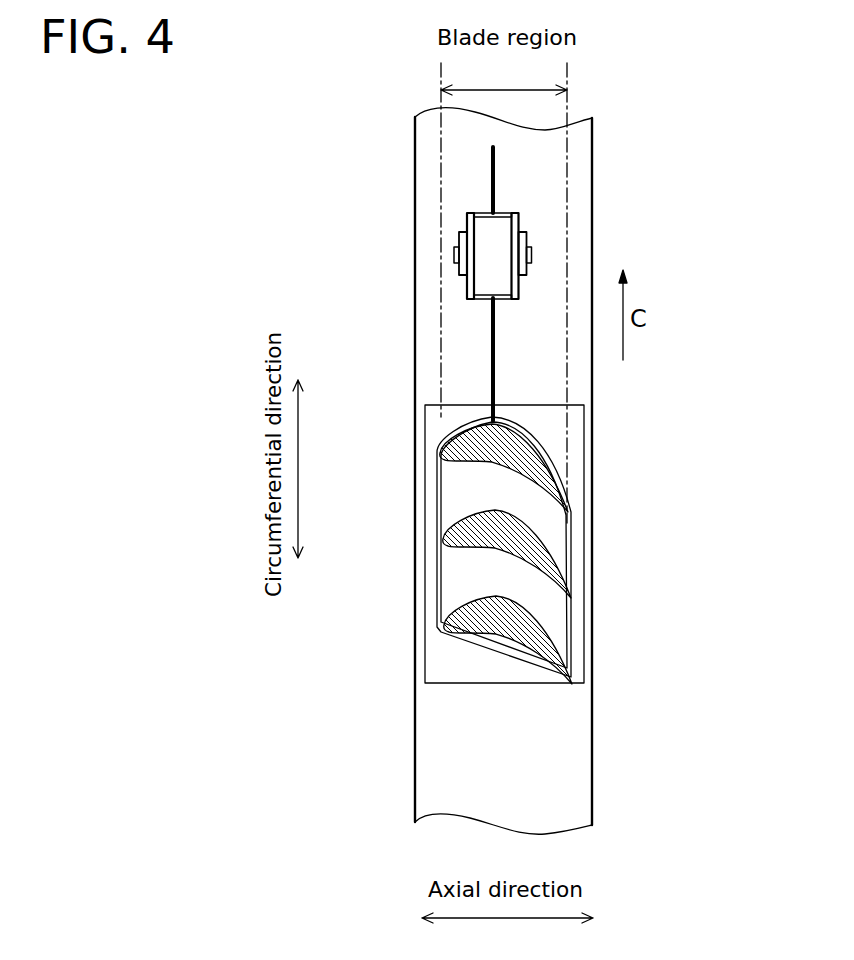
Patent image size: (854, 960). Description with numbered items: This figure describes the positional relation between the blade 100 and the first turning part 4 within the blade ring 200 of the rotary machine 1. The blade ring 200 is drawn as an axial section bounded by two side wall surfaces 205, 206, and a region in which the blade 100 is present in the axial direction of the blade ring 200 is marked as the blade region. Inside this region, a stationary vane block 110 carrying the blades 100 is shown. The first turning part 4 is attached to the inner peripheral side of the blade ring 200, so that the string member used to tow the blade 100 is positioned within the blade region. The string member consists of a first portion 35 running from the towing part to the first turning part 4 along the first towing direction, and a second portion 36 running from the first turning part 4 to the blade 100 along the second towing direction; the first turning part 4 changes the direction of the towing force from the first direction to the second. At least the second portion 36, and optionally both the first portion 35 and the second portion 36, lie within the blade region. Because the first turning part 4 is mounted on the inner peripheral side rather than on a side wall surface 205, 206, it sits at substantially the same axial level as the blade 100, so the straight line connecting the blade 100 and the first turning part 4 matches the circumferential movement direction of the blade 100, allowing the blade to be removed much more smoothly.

The rotary machine 1 is at (349, 191).
The first turning part 4 is at (519, 228).
The first portion of the string member 35 is at (493, 162).
The second portion of the string member 36 is at (493, 344).
The blade 100 is at (537, 464).
The stationary vane block 110 is at (584, 513).
The blade ring 200 is at (503, 471).
The side wall surface 205 is at (593, 244).
The side wall surface 206 is at (415, 266).